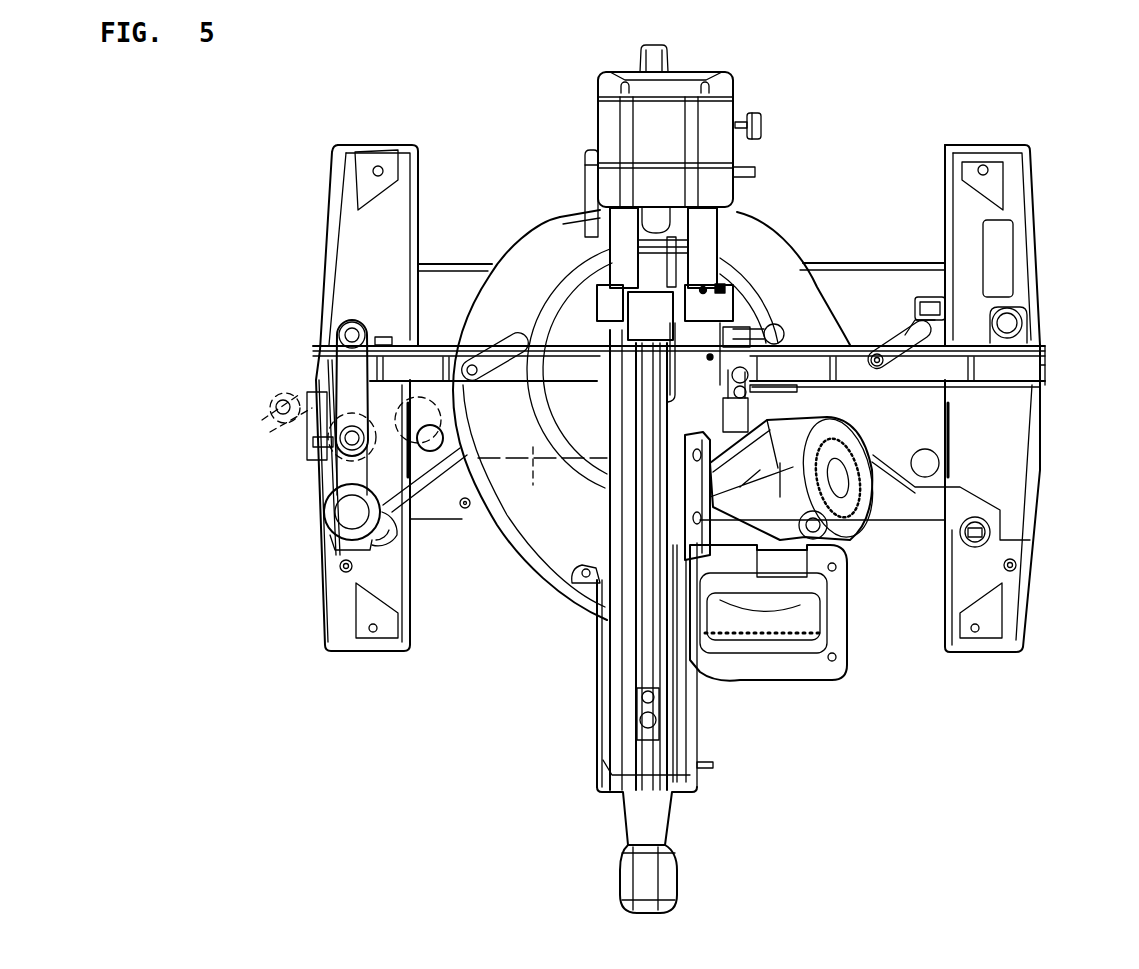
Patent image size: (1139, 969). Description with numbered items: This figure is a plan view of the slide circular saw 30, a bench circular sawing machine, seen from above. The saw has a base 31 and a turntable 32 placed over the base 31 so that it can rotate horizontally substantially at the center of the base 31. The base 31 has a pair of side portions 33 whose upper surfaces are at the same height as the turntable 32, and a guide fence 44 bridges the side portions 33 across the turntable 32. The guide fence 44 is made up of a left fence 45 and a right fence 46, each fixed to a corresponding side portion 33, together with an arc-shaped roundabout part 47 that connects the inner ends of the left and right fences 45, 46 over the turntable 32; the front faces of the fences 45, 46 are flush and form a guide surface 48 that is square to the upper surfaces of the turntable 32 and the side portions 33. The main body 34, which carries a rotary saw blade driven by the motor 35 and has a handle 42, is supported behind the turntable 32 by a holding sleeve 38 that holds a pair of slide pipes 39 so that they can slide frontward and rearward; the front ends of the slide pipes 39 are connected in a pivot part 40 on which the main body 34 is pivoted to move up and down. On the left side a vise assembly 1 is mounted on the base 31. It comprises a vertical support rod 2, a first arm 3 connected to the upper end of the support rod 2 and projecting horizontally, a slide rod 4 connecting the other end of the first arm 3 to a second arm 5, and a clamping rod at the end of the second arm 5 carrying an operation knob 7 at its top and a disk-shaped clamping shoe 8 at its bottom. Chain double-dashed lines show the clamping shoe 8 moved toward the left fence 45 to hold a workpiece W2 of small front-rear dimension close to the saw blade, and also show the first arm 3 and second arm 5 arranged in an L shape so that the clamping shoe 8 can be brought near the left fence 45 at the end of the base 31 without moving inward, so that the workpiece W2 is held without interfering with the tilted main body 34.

The vise assembly 1 is at (372, 302).
The support rod 2 is at (340, 328).
The first arm 3 is at (282, 378).
The slide rod 4 is at (277, 413).
The second arm 5 is at (312, 435).
The operation knob 7 is at (467, 337).
The clamping shoe 8 is at (333, 560).
The slide circular saw 30 is at (857, 143).
The base 31 is at (1050, 470).
The turntable 32 is at (538, 527).
The side portions 33 is at (352, 247).
The main body 34 is at (595, 700).
The motor 35 is at (850, 523).
The holding sleeve 38 is at (727, 110).
The slide pipes 39 is at (627, 227).
The pivot part 40 is at (720, 310).
The handle 42 is at (815, 663).
The guide fence 44 is at (862, 335).
The left fence 45 is at (427, 372).
The right fence 46 is at (1020, 367).
The arc-shaped roundabout part 47 is at (567, 313).
The guide surface 48 is at (587, 453).
The workpiece W2 is at (542, 480).